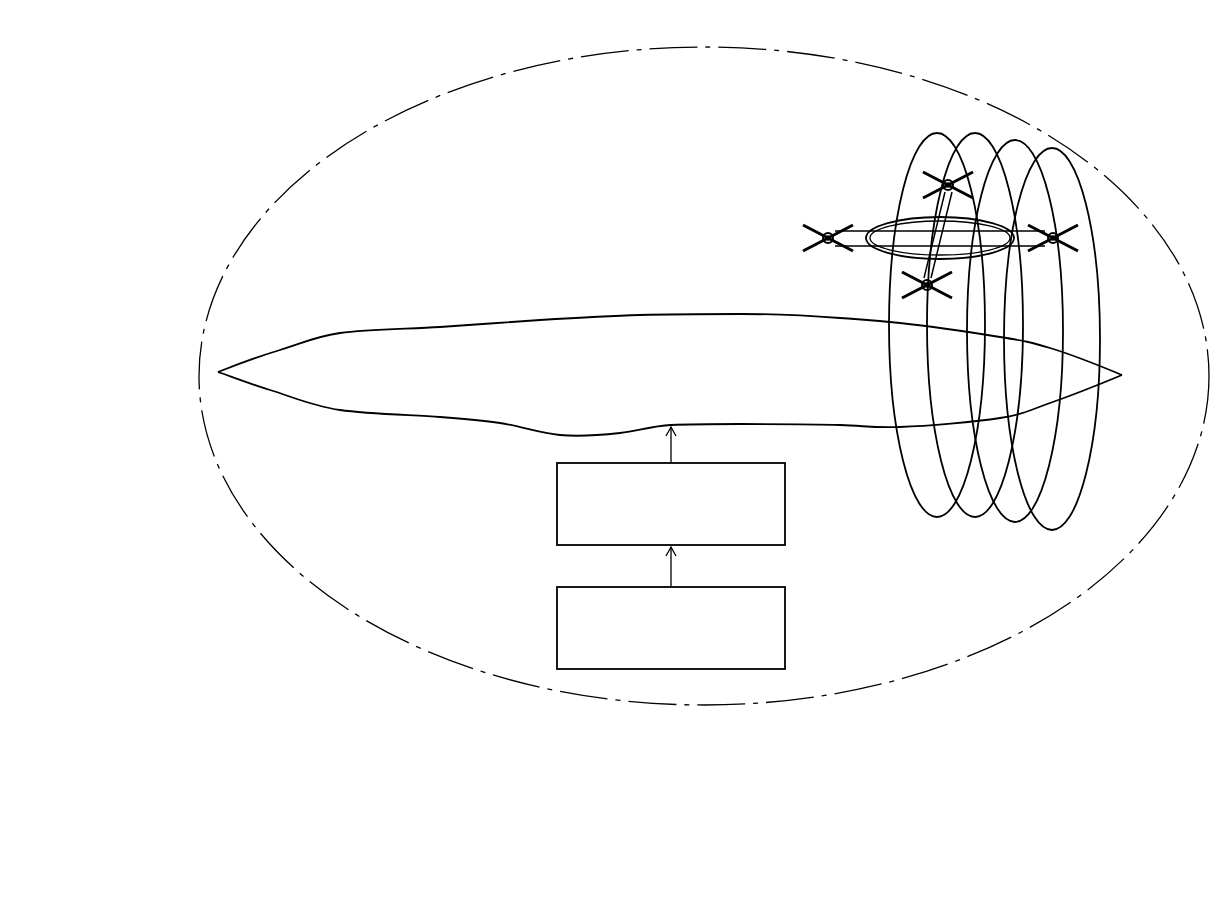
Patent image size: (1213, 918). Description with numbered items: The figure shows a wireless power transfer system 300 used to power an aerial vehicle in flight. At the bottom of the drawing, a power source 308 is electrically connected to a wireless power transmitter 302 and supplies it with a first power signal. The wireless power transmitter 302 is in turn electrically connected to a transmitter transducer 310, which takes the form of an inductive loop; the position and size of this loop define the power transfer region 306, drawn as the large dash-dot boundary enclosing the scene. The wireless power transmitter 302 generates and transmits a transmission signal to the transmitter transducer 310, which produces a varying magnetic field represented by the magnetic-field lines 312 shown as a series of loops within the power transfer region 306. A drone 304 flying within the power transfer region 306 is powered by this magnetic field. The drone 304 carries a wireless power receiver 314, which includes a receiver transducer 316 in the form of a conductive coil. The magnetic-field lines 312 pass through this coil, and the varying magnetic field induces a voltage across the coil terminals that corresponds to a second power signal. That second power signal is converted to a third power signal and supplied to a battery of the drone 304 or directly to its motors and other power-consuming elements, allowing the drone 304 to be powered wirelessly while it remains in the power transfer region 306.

The wireless power transfer system 300 is at (318, 115).
The wireless power transmitter 302 is at (671, 486).
The drone 304 is at (866, 218).
The power transfer region 306 is at (704, 376).
The power source 308 is at (671, 608).
The transmitter transducer 310 is at (1122, 375).
The magnetic-field lines 312 is at (1100, 297).
The wireless power receiver 314 is at (875, 231).
The receiver transducer 316 is at (877, 241).